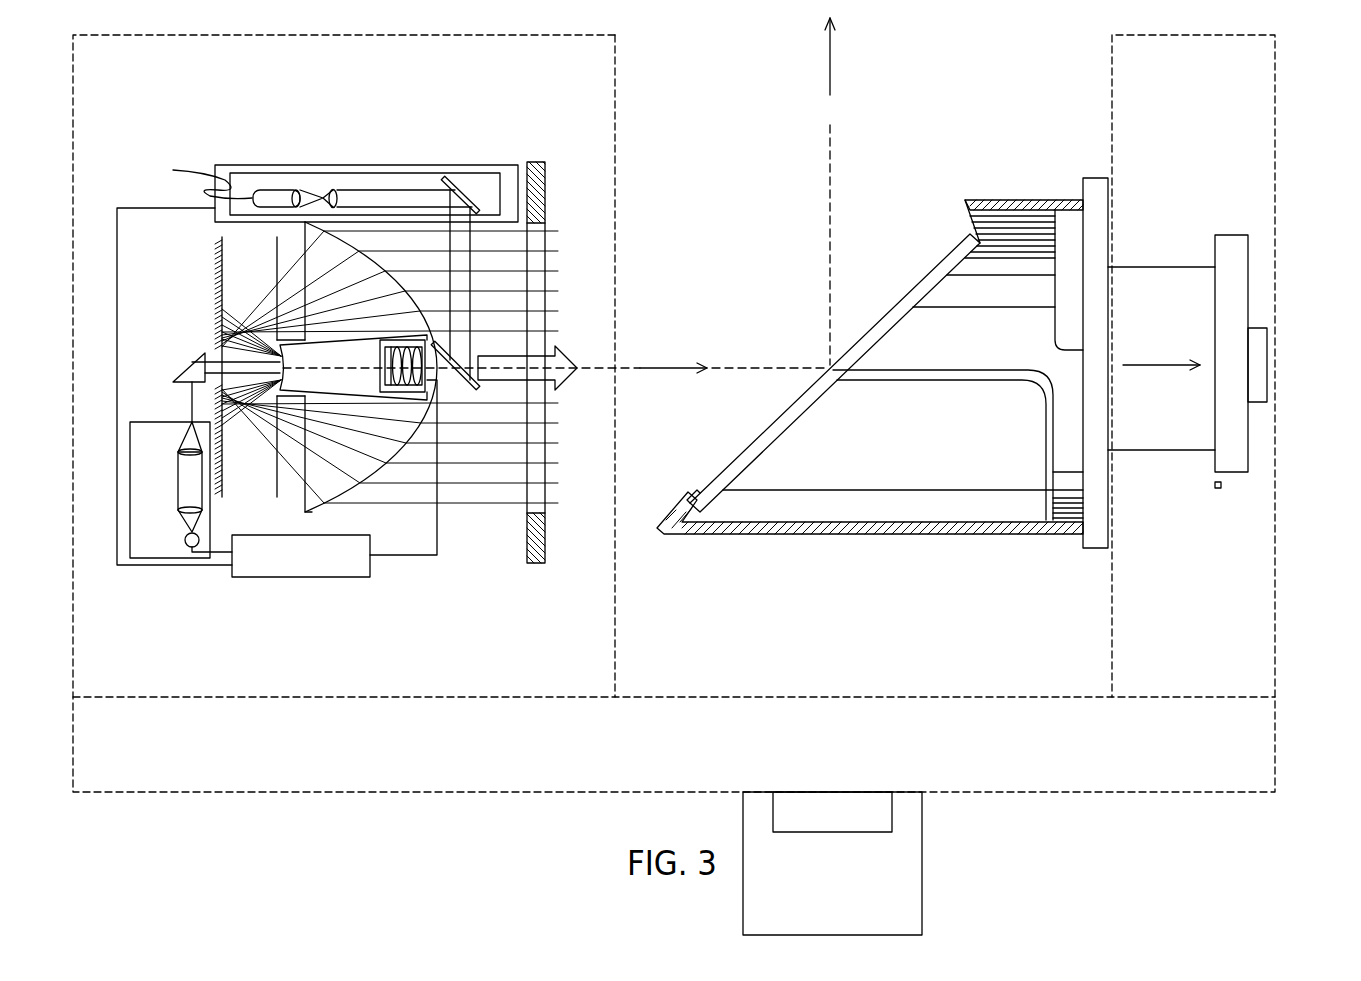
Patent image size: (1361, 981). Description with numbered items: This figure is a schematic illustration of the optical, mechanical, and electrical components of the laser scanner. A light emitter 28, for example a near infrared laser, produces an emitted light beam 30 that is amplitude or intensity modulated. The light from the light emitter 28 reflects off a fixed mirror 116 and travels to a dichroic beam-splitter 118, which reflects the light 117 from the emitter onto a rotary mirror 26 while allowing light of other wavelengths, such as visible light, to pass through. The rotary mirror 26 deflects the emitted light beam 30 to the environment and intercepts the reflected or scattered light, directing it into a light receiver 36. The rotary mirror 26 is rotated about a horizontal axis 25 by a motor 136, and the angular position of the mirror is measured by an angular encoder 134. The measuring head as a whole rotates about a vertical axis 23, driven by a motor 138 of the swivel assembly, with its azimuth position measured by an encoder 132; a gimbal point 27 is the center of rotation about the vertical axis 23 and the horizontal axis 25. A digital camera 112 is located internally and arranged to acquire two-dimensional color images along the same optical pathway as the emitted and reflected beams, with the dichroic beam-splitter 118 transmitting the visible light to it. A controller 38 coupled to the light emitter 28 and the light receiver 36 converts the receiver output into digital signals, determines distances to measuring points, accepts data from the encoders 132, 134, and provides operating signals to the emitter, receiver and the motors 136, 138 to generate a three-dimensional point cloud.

The vertical axis 23 is at (832, 70).
The horizontal axis 25 is at (1133, 362).
The rotary mirror 26 is at (937, 258).
The gimbal point 27 is at (827, 362).
The light emitter 28 is at (277, 190).
The emitted light beam 30 is at (645, 360).
The light receiver 36 is at (157, 495).
The controller 38 is at (303, 578).
The digital camera 112 is at (407, 395).
The fixed mirror 116 is at (465, 185).
The light 117 is at (462, 265).
The dichroic beam-splitter 118 is at (478, 390).
The azimuth encoder 132 is at (890, 817).
The angular encoder 134 is at (1267, 362).
The zenith motor 136 is at (1237, 472).
The azimuth motor 138 is at (922, 915).